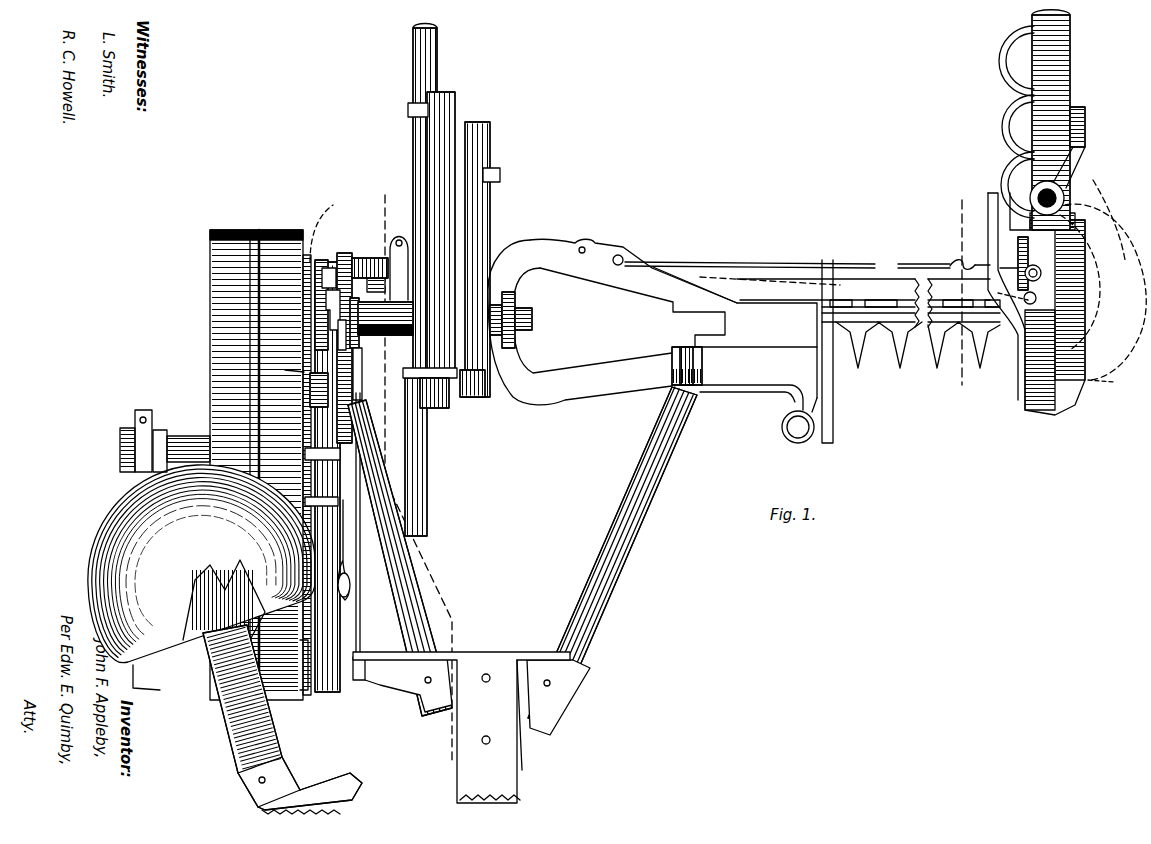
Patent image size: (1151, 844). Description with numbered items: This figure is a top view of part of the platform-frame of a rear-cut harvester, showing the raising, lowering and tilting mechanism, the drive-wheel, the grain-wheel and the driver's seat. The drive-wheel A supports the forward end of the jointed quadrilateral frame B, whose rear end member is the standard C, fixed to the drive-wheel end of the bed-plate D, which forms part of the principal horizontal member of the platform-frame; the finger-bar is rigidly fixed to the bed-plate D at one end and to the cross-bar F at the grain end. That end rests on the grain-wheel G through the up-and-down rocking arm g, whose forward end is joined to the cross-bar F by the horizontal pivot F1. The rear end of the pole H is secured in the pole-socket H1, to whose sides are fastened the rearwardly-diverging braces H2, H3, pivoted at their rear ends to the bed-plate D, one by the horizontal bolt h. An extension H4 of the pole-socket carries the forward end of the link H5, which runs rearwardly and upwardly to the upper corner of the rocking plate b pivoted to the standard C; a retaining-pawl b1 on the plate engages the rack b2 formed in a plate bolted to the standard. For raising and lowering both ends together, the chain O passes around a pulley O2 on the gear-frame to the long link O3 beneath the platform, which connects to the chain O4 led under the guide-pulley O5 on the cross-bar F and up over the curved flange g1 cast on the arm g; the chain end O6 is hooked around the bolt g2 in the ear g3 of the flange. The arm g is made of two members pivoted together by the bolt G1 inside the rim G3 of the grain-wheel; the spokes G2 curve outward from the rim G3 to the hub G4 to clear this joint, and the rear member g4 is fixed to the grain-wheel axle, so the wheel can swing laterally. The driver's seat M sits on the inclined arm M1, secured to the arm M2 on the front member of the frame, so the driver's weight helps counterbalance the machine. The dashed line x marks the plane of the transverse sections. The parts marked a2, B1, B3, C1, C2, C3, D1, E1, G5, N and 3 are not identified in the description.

The drive-wheel A is at (256, 465).
The bracket a2 is at (165, 431).
The jointed quadrilateral frame B is at (321, 475).
The arc of movement B1 is at (323, 226).
The plate B3 is at (286, 367).
The rocking plate b is at (352, 262).
The retaining-pawl b1 is at (329, 310).
The rack b2 is at (350, 349).
The standard C is at (338, 252).
The shaft C1 is at (385, 310).
The collar C2 is at (517, 306).
The shaft end C3 is at (535, 317).
The bed-plate D is at (612, 341).
The hook D1 is at (341, 558).
The finger bar E1 is at (860, 287).
The cross-bar F is at (1036, 304).
The horizontal pivot F1 is at (1106, 385).
The grain-wheel G is at (1060, 120).
The bolt G1 is at (1088, 280).
The spokes G2 is at (1012, 61).
The rim G3 is at (1051, 77).
The hub G4 is at (1012, 127).
The loop G5 is at (1012, 185).
The up-and-down rocking arm g is at (1045, 281).
The flange g1 is at (1040, 278).
The bolt g2 is at (914, 323).
The ear g3 is at (1040, 303).
The rear member of jointed arm g4 is at (1075, 147).
The pole H is at (461, 727).
The pole-socket H1 is at (558, 683).
The brace H2 is at (400, 558).
The brace H3 is at (612, 557).
The extension H4 is at (402, 675).
The link H5 is at (365, 516).
The horizontal bolt h is at (694, 366).
The driver's seat M is at (201, 564).
The inclined arm M1 is at (282, 719).
The arm M2 is at (317, 658).
The foot N is at (146, 677).
The chain O is at (433, 280).
The pulley O2 is at (370, 260).
The long link O3 is at (807, 253).
The chain O4 is at (965, 256).
The guide-pulley O5 is at (1019, 258).
The chain end O6 is at (1000, 297).
The section line x x is at (415, 468).
The section line 3- 3 is at (961, 292).